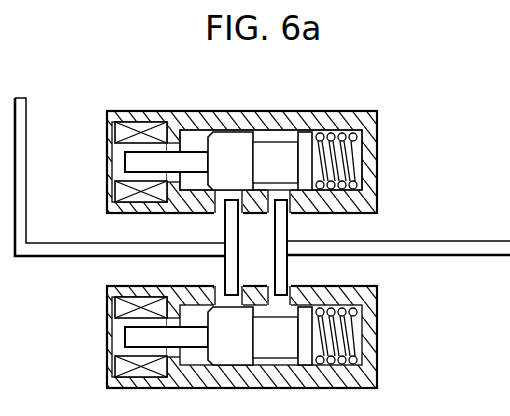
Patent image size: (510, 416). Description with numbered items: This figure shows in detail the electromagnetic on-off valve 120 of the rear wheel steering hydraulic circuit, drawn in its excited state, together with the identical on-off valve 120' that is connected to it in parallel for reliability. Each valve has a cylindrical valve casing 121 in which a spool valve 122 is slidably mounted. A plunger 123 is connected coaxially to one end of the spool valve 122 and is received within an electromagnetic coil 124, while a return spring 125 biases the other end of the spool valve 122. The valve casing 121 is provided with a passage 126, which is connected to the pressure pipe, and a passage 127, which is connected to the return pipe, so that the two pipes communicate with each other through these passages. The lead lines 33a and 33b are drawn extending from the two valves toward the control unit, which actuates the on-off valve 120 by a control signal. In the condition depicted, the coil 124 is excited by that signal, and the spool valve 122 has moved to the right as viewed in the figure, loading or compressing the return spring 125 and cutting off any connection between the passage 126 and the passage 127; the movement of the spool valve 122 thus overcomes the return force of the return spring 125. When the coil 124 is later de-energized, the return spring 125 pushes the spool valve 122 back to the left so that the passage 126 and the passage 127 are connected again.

The lead wire 33a is at (27, 148).
The lead wire 33b is at (481, 257).
The electromagnetic on-off valve 120 is at (274, 163).
The identical on-off valve 120' is at (284, 336).
The cylindrical valve casing 121 is at (307, 120).
The spool valve 122 is at (232, 148).
The plunger 123 is at (187, 152).
The electromagnetic coil 124 is at (130, 126).
The return spring 125 is at (355, 172).
The passage 126 is at (224, 229).
The passage 127 is at (288, 228).